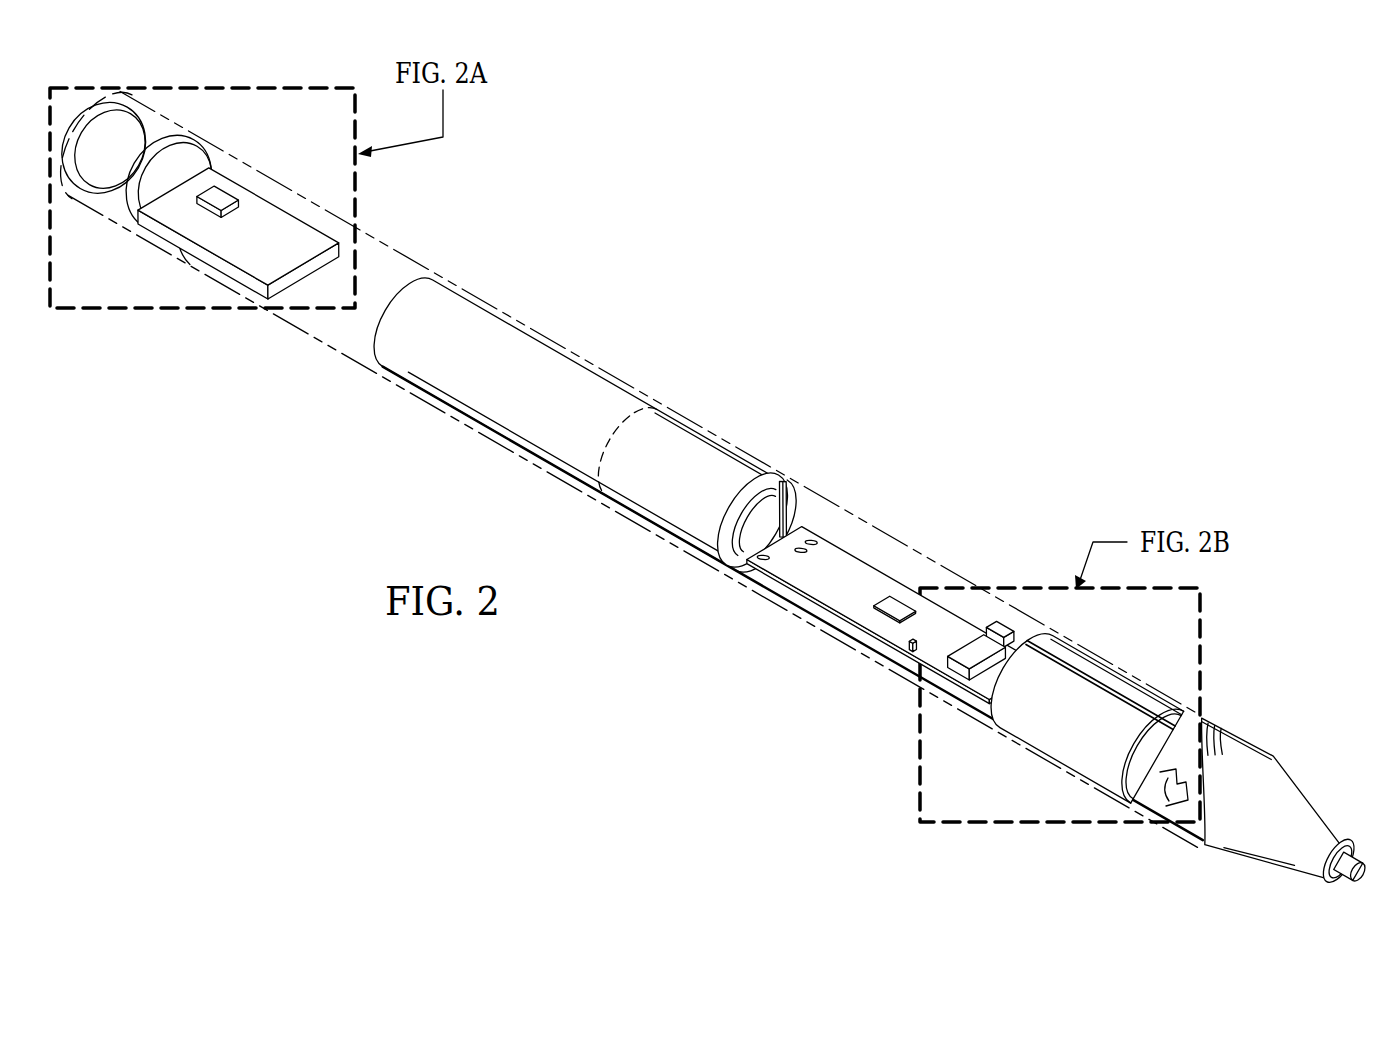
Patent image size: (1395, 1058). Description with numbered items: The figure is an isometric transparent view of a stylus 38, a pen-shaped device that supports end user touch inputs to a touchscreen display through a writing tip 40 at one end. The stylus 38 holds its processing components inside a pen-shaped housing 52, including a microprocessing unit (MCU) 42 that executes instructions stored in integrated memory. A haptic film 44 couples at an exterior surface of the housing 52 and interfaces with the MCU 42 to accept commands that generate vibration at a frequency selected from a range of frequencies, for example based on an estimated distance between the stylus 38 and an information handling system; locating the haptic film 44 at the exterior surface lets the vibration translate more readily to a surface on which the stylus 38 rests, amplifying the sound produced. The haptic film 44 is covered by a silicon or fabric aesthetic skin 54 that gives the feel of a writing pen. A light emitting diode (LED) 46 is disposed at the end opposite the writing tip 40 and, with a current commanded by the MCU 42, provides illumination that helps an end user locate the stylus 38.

The stylus 38 is at (770, 290).
The writing tip 40 is at (1362, 884).
The microprocessing unit (MCU) 42 is at (904, 572).
The haptic film 44 is at (1100, 668).
The light emitting diode (LED) 46 is at (277, 165).
The housing 52 is at (596, 367).
The aesthetic skin 54 is at (748, 463).